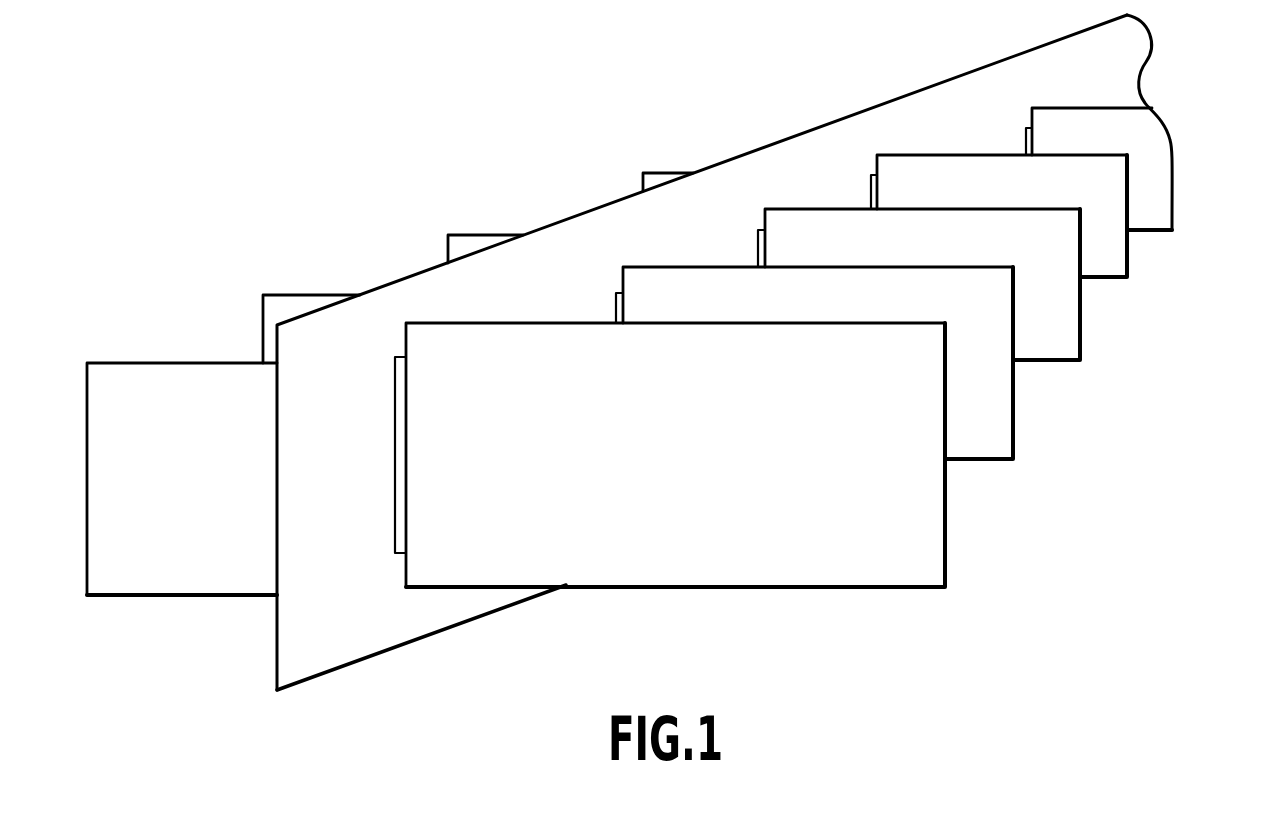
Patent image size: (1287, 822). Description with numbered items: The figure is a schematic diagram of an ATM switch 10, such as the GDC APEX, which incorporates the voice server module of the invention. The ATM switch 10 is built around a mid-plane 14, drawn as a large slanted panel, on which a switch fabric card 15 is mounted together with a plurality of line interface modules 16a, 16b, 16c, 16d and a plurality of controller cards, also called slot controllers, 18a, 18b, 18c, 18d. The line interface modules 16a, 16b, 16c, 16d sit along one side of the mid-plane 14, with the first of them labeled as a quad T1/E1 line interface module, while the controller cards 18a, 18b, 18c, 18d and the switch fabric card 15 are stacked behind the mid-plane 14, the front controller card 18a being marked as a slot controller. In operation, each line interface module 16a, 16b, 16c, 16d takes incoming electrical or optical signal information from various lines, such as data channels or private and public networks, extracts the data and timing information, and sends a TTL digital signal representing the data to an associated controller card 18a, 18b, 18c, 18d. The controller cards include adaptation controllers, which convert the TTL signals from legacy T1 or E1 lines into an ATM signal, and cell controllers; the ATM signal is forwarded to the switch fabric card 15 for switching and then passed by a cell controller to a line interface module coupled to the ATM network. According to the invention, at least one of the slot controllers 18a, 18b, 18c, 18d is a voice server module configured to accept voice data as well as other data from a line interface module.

The ATM switch 10 is at (500, 112).
The mid-plane 14 is at (706, 235).
The switch fabric card 15 is at (1127, 255).
The line interface module 16a is at (118, 363).
The line interface module 16b is at (297, 295).
The line interface module 16c is at (473, 235).
The line interface module 16d is at (660, 173).
The controller card 18a is at (945, 520).
The controller card 18b is at (1013, 413).
The controller card 18c is at (1080, 330).
The controller card 18d is at (1172, 182).